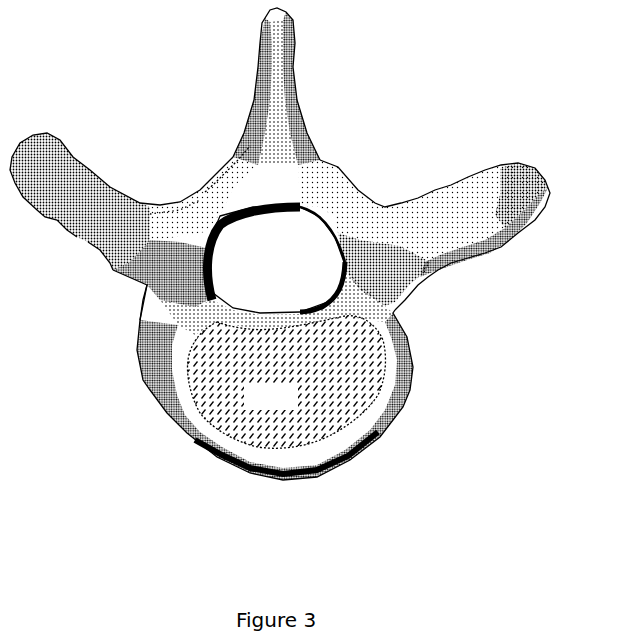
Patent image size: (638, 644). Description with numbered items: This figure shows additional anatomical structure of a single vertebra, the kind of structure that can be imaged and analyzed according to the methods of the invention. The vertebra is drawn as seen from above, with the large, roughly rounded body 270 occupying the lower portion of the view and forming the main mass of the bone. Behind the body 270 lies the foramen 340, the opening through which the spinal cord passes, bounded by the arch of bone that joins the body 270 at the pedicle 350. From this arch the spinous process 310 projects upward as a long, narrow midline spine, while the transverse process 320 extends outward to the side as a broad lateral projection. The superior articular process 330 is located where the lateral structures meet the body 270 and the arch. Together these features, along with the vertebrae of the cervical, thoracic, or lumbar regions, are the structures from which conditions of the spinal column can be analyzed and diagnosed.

The spinous process 310 is at (300, 42).
The transverse process 320 is at (64, 152).
The superior articular process 330 is at (110, 270).
The foramen 340 is at (293, 276).
The pedicle 350 is at (365, 303).
The body 270 is at (290, 406).